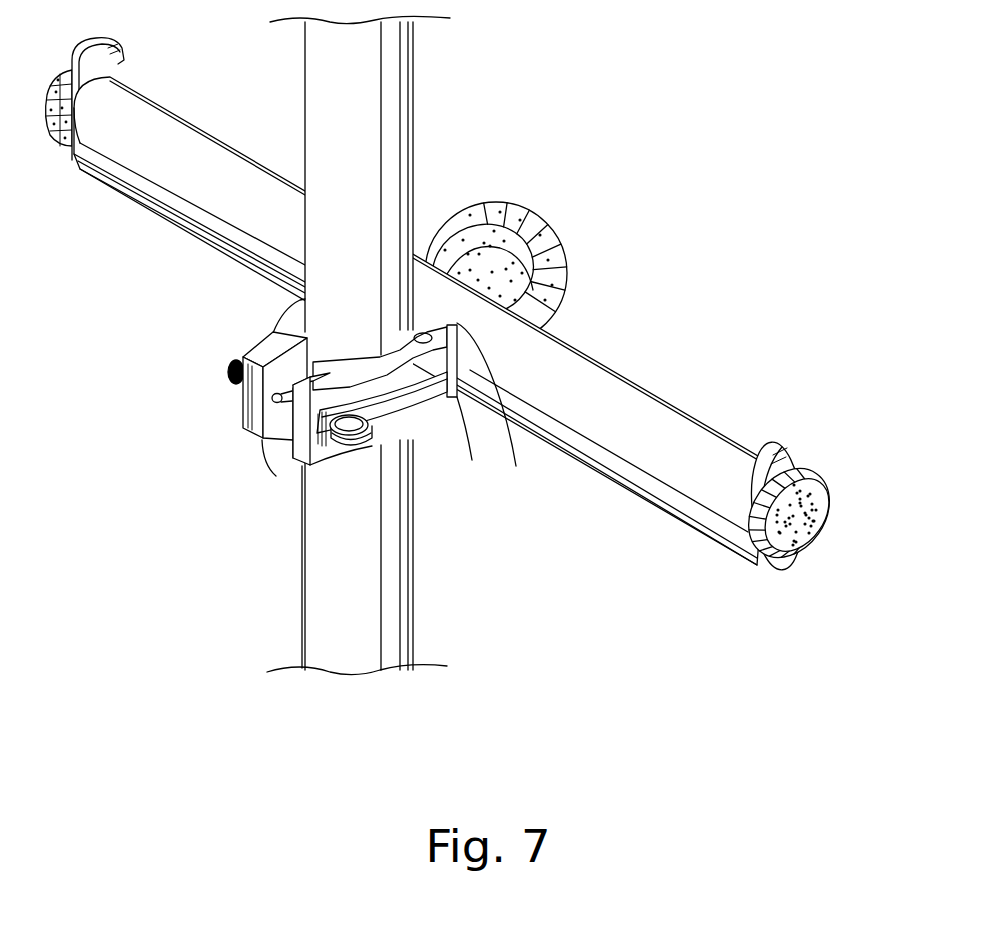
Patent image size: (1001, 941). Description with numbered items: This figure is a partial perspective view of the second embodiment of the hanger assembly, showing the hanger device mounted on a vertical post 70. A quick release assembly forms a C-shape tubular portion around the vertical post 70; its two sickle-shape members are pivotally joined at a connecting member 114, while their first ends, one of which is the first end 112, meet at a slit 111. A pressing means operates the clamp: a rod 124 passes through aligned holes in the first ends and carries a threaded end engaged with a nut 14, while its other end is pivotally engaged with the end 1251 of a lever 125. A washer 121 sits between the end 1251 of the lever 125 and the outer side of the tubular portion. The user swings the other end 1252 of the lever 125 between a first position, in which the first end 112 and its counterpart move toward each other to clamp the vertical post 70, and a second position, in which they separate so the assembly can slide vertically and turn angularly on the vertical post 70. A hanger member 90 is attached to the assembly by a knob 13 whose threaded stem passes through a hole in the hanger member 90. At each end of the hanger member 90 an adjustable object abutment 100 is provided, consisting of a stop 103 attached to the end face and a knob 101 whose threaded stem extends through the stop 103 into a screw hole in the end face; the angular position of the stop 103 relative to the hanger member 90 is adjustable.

The vertical post 70 is at (395, 98).
The knob 13 is at (520, 225).
The hanger member 90 is at (651, 415).
The stop 103 is at (783, 445).
The adjustable object abutment 100 is at (827, 527).
The knob 101 is at (785, 553).
The nut 14 is at (228, 366).
The first end 112 is at (243, 400).
The rod 124 is at (278, 401).
The slit 111 is at (283, 440).
The washer 121 is at (308, 468).
The end of the lever 1251 is at (349, 455).
The other end of the lever 1252 is at (450, 395).
The connecting member 114 is at (516, 466).
The lever 125 is at (410, 458).